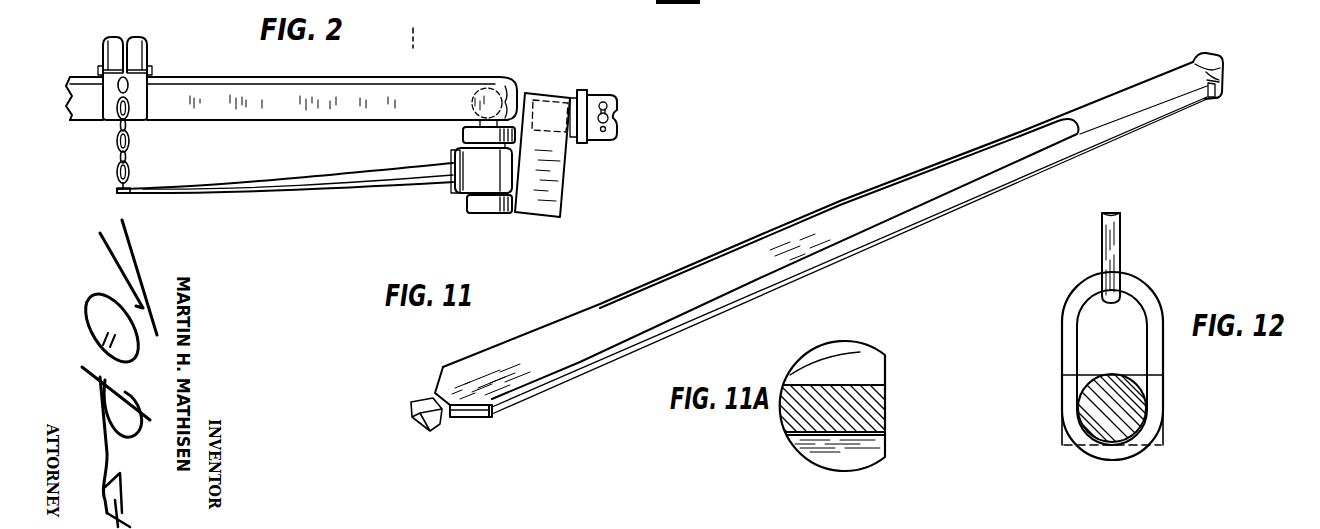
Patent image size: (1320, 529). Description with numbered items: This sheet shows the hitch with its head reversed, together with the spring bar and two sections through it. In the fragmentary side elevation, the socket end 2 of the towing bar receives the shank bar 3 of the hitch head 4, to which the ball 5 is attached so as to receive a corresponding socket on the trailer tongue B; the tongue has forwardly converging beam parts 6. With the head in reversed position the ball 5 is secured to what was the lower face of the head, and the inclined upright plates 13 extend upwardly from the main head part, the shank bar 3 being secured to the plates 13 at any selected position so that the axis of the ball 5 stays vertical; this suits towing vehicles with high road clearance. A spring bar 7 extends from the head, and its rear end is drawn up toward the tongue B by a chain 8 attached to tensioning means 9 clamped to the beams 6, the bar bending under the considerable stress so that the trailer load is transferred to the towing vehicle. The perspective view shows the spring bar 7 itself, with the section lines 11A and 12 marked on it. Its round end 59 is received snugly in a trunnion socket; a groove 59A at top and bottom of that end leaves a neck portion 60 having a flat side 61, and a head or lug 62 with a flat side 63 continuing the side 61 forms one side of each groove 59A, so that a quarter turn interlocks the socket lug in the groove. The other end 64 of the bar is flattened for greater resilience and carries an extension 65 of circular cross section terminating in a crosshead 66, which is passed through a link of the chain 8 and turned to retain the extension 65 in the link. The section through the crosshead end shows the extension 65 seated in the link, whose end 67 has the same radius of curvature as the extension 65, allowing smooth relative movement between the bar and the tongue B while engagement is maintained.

In FIG. 2, the socket end 2 is at (614, 131).
In FIG. 2, the shank bar 3 is at (573, 143).
In FIG. 2, the hitch head 4 is at (505, 219).
In FIG. 2, the ball 5 is at (518, 84).
In FIG. 2, the beam parts 6 is at (178, 92).
In FIG. 2, the spring bar 7 is at (322, 190).
In FIG. 11, the spring bar 7 is at (955, 207).
In FIG. 12, the spring bar 7 is at (1111, 258).
In FIG. 2, the chain 8 is at (132, 149).
In FIG. 2, the tensioning means 9 is at (149, 46).
In FIG. 2, the inclined upright plates 13 is at (558, 198).
In FIG. 2, the trailer tongue B is at (360, 74).
In FIG. 11, the section line 12— 12 is at (382, 366).
In FIG. 11, the section line IIA—IIA 11A is at (1194, 11).
In FIG. 11, the round end 59 is at (1110, 133).
In FIG. 11, the groove 59A is at (1220, 56).
In FIG. 11A, the groove 59A is at (818, 368).
In FIG. 11A, the neck portion 60 is at (873, 421).
In FIG. 11, the flat side 61 is at (1221, 86).
In FIG. 11A, the flat side 61 is at (886, 400).
In FIG. 11, the head or lug 62 is at (1218, 98).
In FIG. 11A, the head or lug 62 is at (848, 342).
In FIG. 11, the flat side 63 is at (1222, 71).
In FIG. 11A, the flat side 63 is at (889, 362).
In FIG. 11, the other end 64 is at (582, 323).
In FIG. 11, the extension 65 is at (444, 412).
In FIG. 12, the extension 65 is at (1130, 398).
In FIG. 11, the crosshead 66 is at (417, 420).
In FIG. 12, the crosshead 66 is at (1158, 438).
In FIG. 12, the end of the link 67 is at (1137, 450).